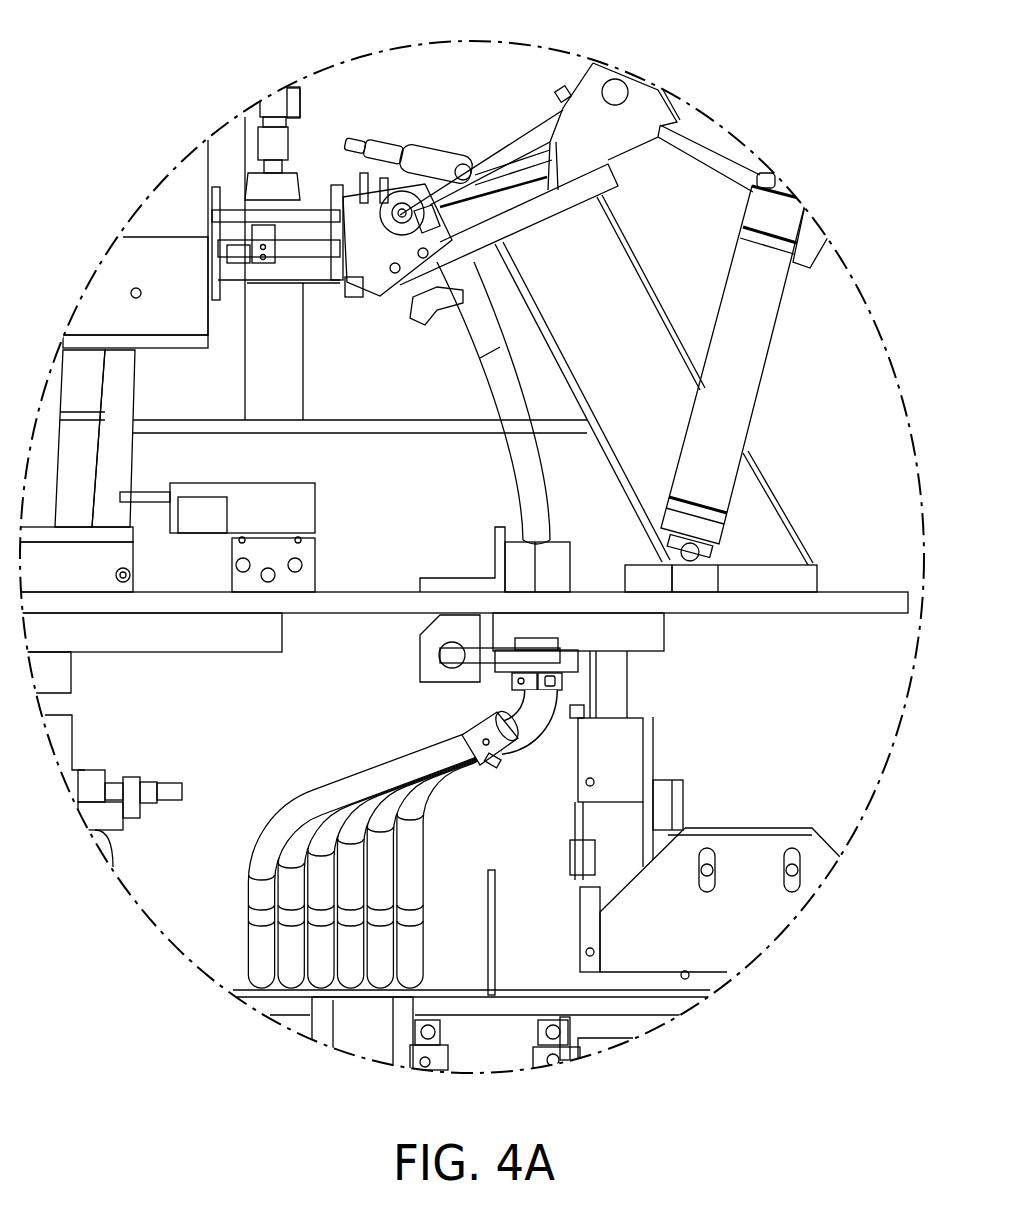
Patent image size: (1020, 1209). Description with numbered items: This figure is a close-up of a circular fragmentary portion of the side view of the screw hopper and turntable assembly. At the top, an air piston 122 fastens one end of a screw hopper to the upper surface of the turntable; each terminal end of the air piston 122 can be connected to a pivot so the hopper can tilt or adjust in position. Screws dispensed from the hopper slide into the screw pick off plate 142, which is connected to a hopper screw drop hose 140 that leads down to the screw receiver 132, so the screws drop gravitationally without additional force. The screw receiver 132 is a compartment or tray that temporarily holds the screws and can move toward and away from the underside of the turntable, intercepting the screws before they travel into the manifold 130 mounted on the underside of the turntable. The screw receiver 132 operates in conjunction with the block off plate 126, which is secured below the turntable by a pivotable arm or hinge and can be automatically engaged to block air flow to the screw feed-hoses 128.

The air piston 122 is at (750, 392).
The block off plate 126 is at (530, 643).
The screw feed-hoses 128 is at (255, 940).
The manifold 130 is at (476, 735).
The screw receiver 132 is at (638, 633).
The hopper screw drop hoses 140 is at (507, 408).
The screw pick off plate 142 is at (396, 212).